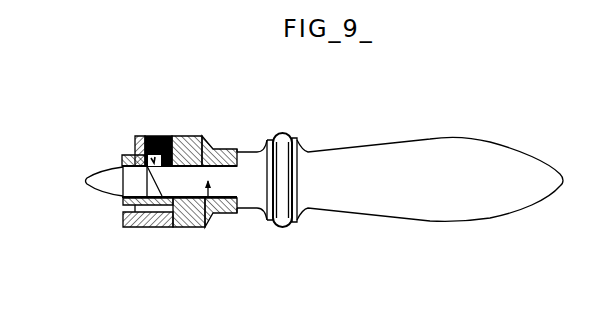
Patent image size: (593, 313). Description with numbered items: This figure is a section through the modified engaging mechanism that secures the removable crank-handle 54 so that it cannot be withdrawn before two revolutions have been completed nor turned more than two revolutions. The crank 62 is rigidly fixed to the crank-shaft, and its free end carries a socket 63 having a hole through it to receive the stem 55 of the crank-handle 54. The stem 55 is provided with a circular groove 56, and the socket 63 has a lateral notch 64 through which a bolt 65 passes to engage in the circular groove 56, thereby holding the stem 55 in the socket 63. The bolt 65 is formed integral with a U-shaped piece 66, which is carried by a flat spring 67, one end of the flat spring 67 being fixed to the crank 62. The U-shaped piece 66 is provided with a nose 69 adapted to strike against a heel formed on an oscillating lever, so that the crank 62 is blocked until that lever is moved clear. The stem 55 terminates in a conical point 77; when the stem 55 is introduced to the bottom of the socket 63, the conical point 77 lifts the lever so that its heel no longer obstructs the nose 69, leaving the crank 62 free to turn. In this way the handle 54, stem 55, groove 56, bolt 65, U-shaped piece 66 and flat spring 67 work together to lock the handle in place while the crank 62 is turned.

The crank-handle 54 is at (415, 180).
The stem 55 is at (209, 225).
The circular groove 56 is at (148, 180).
The crank 62 is at (213, 150).
The socket 63 is at (122, 160).
The lateral notch 64 is at (187, 136).
The bolt 65 is at (167, 136).
The U-shaped piece 66 is at (163, 225).
The flat spring 67 is at (131, 157).
The nose 69 is at (130, 227).
The conical point 77 is at (100, 180).